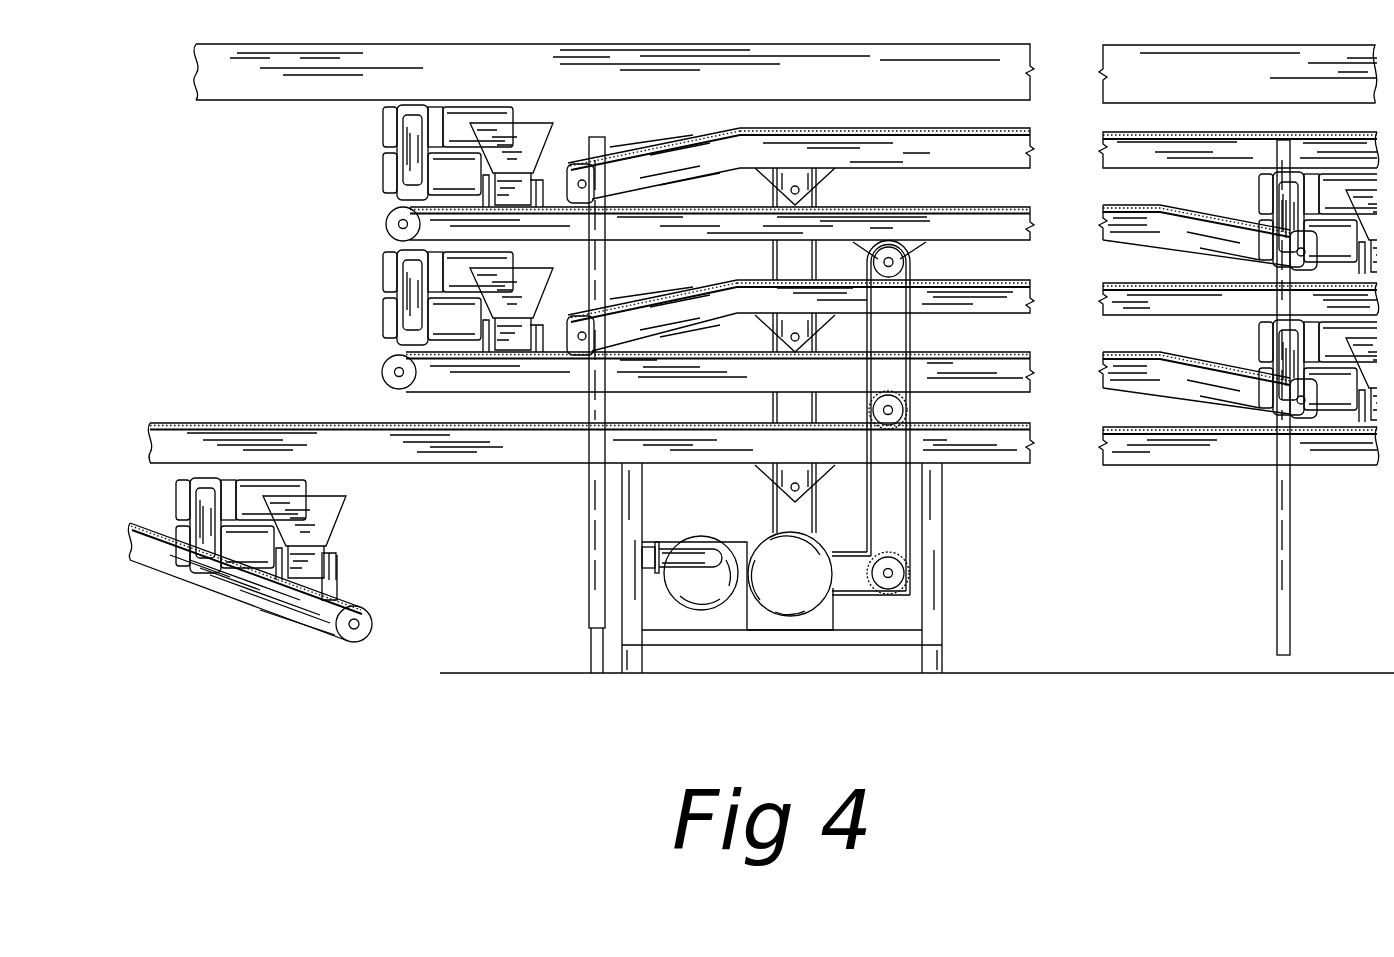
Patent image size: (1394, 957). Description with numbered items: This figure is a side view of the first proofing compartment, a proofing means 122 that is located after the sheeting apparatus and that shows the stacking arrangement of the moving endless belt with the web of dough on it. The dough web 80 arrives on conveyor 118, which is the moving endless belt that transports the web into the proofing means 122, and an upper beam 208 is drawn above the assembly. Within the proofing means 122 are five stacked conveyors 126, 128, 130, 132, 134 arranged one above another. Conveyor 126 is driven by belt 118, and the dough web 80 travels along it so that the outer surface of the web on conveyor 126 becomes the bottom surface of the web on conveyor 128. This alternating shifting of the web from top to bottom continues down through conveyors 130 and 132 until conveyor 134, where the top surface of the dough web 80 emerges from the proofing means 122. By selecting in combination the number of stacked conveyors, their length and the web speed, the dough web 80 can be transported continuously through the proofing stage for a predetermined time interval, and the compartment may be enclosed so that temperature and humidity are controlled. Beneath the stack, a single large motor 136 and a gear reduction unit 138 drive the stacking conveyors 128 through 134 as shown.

The overhead conveyor 208 is at (716, 44).
The dough web 80 is at (469, 424).
The conveyor 118 is at (1102, 140).
The proofing means 122 is at (1150, 536).
The conveyor 126 is at (905, 168).
The conveyor 128 is at (973, 240).
The conveyor 130 is at (976, 313).
The conveyor 132 is at (976, 392).
The conveyor 134 is at (993, 463).
The motor 136 is at (700, 610).
The gear reduction unit 138 is at (797, 613).